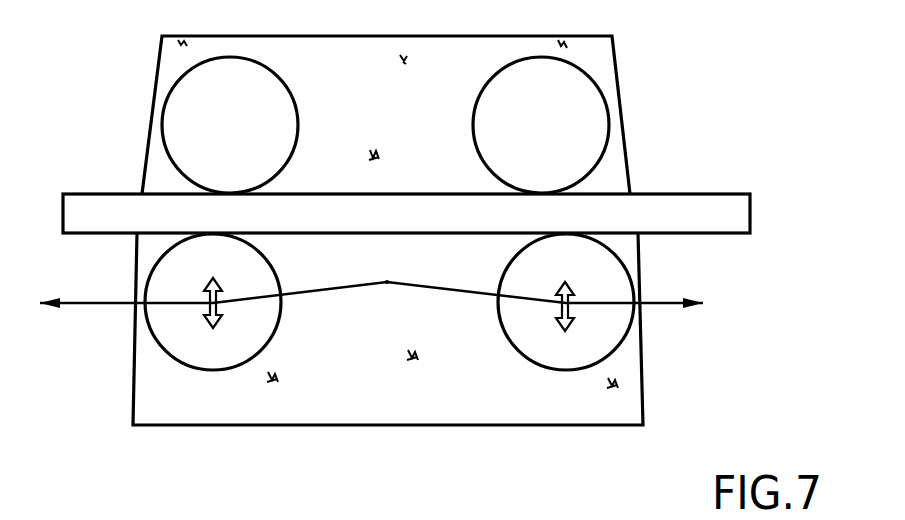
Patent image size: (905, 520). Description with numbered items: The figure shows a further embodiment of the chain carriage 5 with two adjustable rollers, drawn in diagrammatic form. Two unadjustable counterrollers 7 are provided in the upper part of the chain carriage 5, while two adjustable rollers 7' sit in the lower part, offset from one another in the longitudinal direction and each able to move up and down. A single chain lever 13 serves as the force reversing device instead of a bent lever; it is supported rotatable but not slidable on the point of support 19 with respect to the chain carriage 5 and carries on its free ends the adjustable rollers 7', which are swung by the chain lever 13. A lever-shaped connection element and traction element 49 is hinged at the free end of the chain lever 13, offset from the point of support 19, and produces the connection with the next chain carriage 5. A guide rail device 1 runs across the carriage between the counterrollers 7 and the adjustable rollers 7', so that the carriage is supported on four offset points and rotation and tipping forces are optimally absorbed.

The web guide bar / support plate 1 is at (693, 200).
The chain carriage 5 is at (617, 92).
The counterroller 7 is at (385, 125).
The adjustable roller 7' is at (389, 329).
The chain lever 13 is at (312, 297).
The point of support 19 is at (387, 285).
The connection element and traction element 49 is at (100, 305).